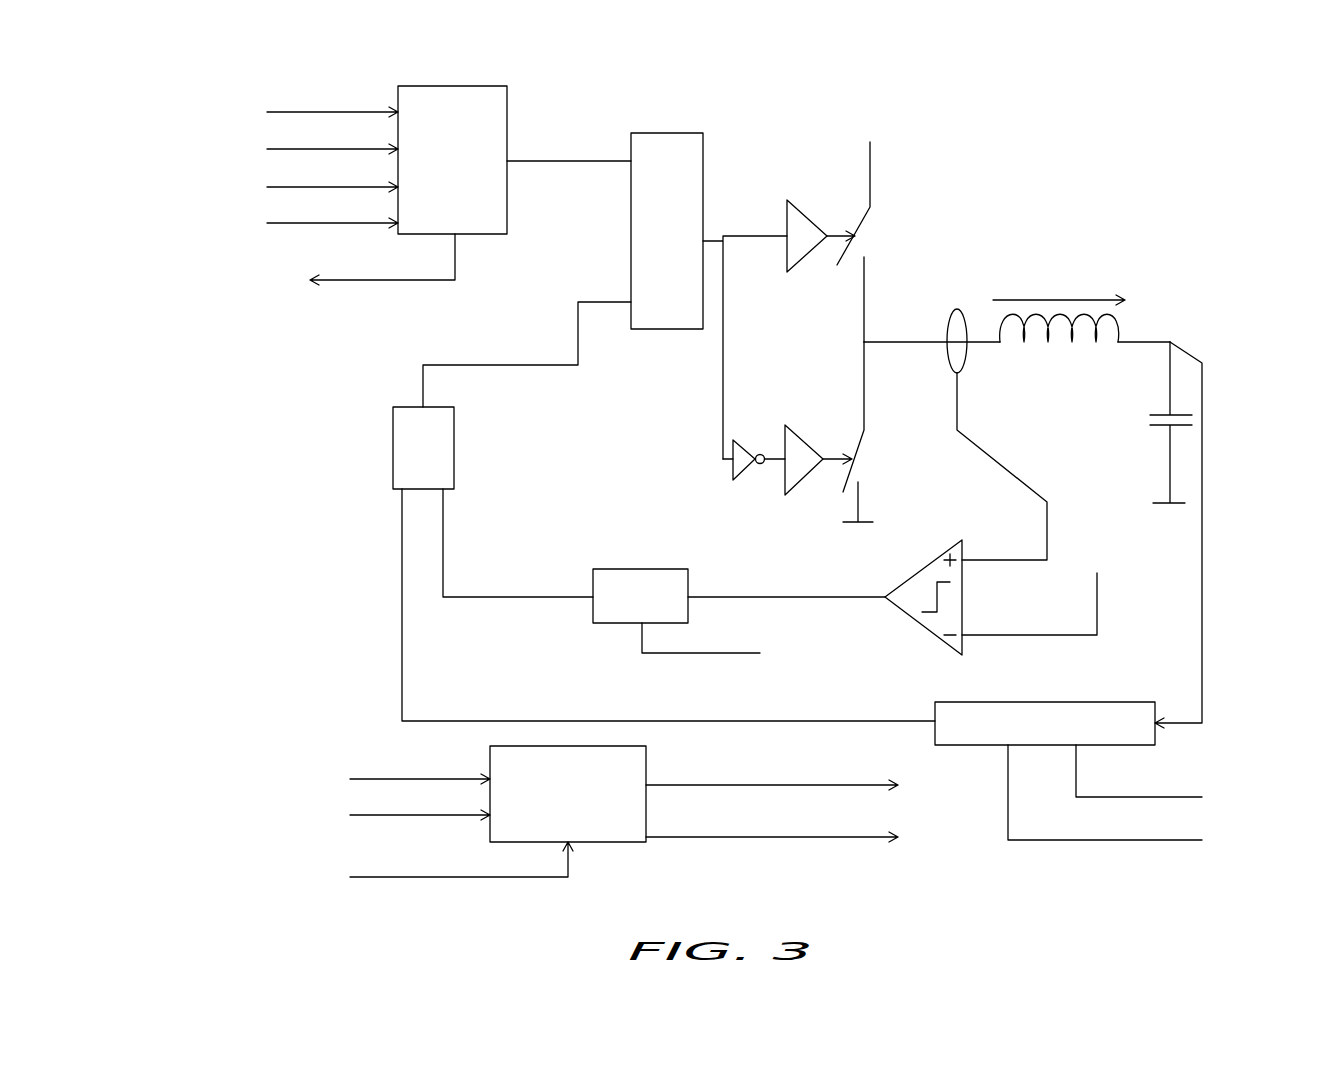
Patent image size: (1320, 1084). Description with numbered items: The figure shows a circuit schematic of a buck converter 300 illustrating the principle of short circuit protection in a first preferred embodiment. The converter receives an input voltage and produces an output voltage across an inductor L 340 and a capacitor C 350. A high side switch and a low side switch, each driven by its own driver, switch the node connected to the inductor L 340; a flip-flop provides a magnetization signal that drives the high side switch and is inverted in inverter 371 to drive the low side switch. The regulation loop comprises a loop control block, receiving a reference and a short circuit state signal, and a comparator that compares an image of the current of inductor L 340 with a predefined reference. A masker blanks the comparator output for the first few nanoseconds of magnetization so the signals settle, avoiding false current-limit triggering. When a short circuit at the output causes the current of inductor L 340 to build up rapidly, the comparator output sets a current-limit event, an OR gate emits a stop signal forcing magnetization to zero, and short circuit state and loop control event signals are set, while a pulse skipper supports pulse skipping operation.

The switching regulator circuit 300 is at (790, 78).
The inductor L 340 is at (1052, 404).
The capacitor C 350 is at (1109, 461).
The inverter 371 is at (746, 482).